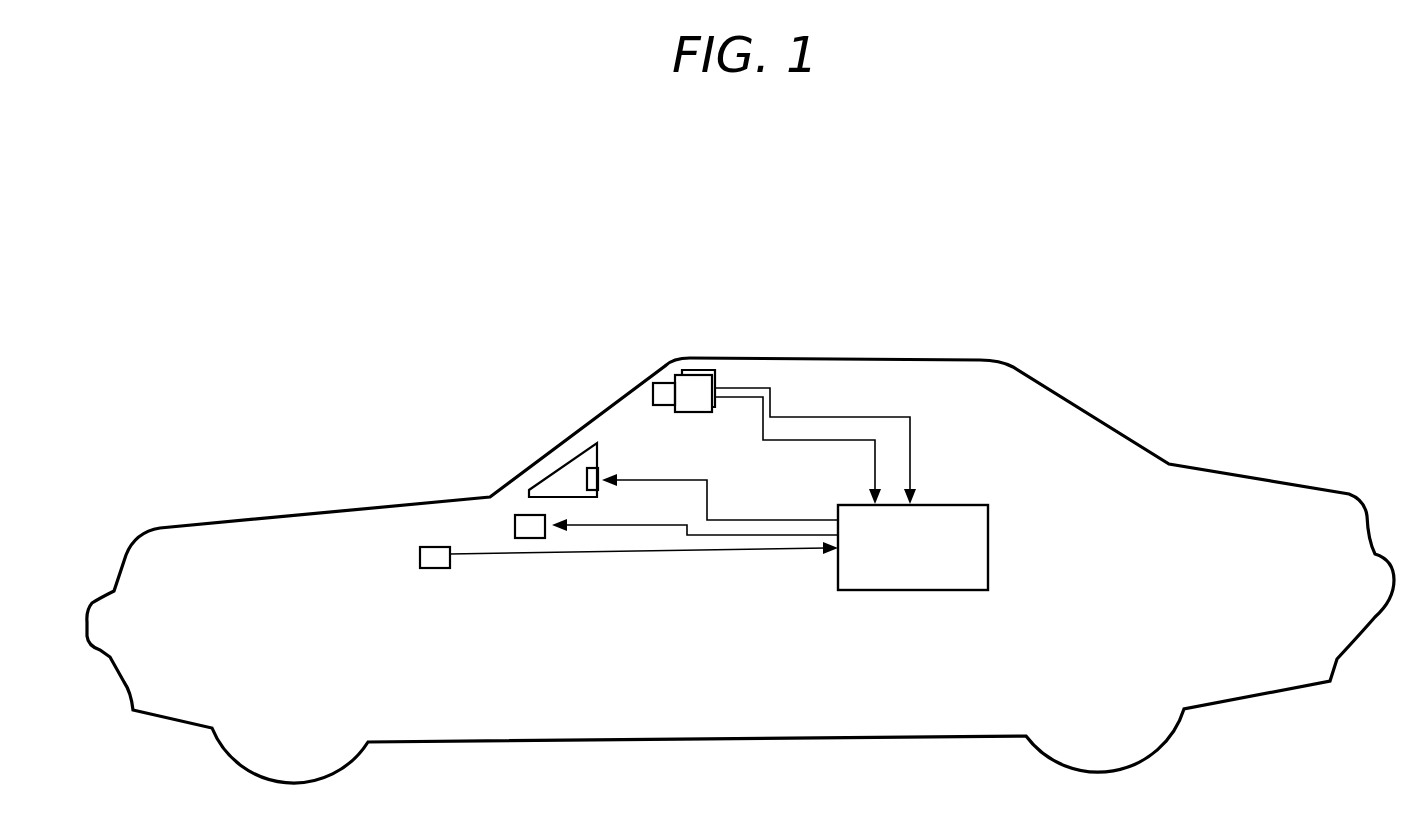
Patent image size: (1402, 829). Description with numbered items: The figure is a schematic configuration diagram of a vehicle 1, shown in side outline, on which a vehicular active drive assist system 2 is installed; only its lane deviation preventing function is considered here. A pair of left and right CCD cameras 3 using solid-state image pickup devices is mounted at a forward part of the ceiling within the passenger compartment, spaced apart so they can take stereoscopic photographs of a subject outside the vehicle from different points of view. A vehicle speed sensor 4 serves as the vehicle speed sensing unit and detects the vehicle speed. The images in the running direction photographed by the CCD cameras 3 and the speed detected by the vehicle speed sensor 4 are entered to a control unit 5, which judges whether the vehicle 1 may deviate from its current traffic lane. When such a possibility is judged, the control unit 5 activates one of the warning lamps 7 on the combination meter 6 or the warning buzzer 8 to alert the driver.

The vehicle 1 is at (849, 280).
The vehicular active drive assist system 2 is at (996, 430).
The CCD cameras 3 is at (695, 371).
The vehicle speed sensor 4 is at (432, 546).
The control unit 5 is at (990, 540).
The combination meter 6 is at (563, 461).
The warning lamps 7 is at (602, 473).
The warning buzzer 8 is at (520, 514).